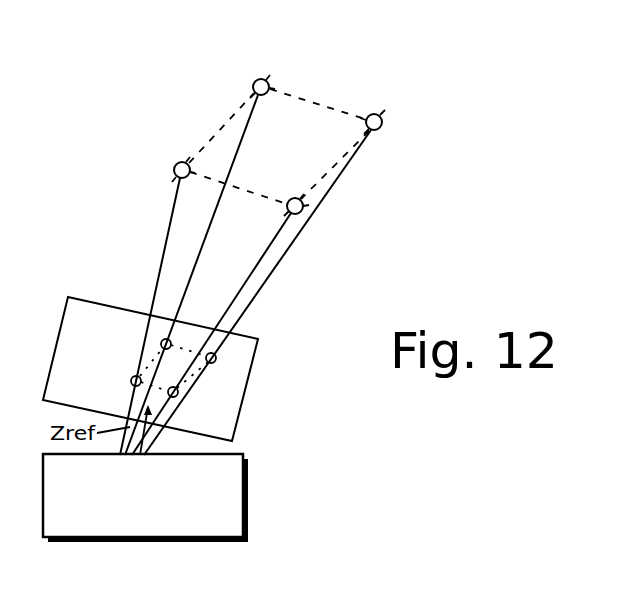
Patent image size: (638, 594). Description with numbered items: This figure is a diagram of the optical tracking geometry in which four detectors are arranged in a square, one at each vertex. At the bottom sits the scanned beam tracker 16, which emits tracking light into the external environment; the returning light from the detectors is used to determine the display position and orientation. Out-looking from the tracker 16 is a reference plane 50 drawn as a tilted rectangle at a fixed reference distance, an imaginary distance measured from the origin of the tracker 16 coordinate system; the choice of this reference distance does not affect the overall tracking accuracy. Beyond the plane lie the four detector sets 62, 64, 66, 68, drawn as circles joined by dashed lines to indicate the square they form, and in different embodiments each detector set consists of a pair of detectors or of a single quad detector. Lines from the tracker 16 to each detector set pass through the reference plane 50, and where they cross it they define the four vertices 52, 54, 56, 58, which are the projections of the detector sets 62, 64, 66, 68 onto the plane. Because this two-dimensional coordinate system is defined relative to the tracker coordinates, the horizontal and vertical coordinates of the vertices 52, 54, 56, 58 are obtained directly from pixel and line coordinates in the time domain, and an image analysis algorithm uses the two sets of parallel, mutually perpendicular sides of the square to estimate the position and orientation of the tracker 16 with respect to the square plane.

The scanned beam tracker 16 is at (250, 500).
The reference 2D plane 50 is at (110, 303).
The first vertex 52 is at (131, 382).
The second vertex 54 is at (172, 346).
The third vertex 56 is at (216, 358).
The fourth vertex 58 is at (178, 393).
The first detector set 62 is at (178, 162).
The second detector set 64 is at (265, 79).
The third detector set 66 is at (379, 114).
The fourth detector set 68 is at (289, 197).